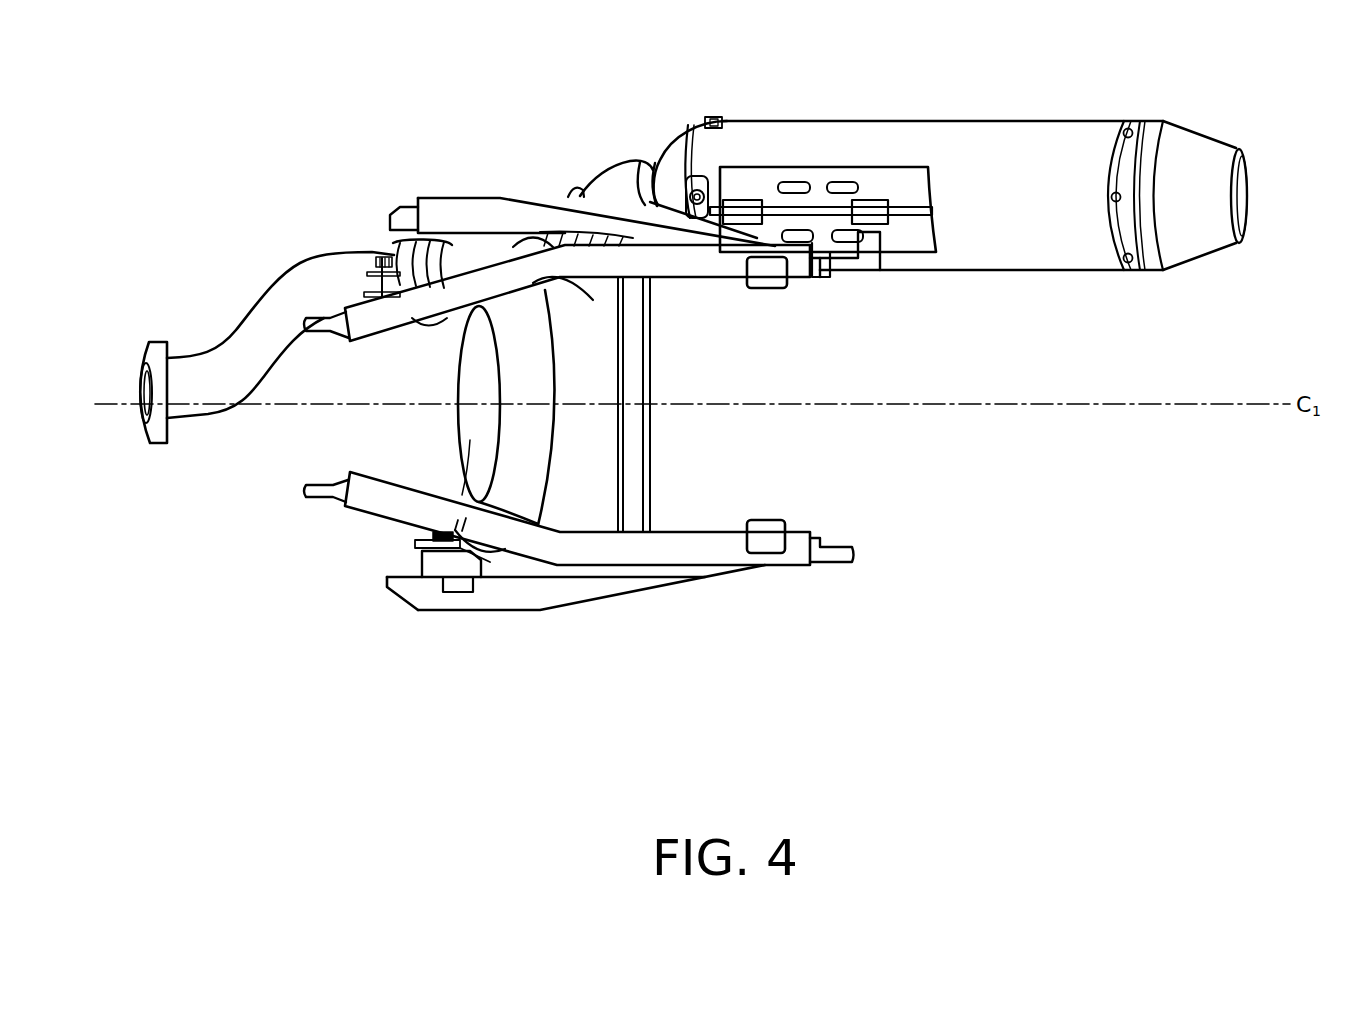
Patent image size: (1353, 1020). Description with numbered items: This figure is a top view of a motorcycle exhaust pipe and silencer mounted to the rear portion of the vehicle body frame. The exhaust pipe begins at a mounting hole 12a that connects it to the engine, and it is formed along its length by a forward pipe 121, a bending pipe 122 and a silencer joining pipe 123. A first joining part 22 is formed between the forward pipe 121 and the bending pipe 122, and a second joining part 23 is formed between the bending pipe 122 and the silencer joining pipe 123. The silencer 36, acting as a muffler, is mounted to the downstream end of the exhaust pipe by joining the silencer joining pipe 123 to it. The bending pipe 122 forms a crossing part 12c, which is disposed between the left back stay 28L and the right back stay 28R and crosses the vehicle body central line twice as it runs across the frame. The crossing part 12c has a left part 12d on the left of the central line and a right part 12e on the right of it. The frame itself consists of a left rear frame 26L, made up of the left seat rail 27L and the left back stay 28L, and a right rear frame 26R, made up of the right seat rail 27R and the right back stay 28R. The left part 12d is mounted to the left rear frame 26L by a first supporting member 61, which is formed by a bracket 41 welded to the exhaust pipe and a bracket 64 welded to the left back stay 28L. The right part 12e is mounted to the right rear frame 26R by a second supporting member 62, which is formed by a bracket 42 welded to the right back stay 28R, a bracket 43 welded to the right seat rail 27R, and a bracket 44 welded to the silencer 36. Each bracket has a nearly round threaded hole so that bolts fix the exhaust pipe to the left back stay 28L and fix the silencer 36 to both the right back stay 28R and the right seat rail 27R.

The forward pipe 121 is at (263, 290).
The mounting hole 12a is at (160, 446).
The first joining part 22 is at (386, 247).
The crossing part 12c is at (560, 382).
The left part 12d is at (497, 563).
The bending pipe 122 is at (458, 438).
The silencer joining pipe 123 is at (617, 162).
The second joining part 23 is at (573, 184).
The right rear frame 26R is at (592, 190).
The right seat rail 27R is at (521, 253).
The right back stay 28R is at (447, 198).
The left rear frame 26L is at (579, 605).
The left seat rail 27L is at (580, 568).
The left back stay 28L is at (566, 613).
The first supporting member 61 is at (361, 570).
The bracket 41 is at (414, 543).
The bracket 64 is at (417, 574).
The silencer 36 is at (1007, 118).
The right part 12e is at (676, 116).
The second supporting member 62 is at (823, 138).
The bracket 42 is at (773, 218).
The bracket 43 is at (827, 248).
The bracket 44 is at (872, 164).